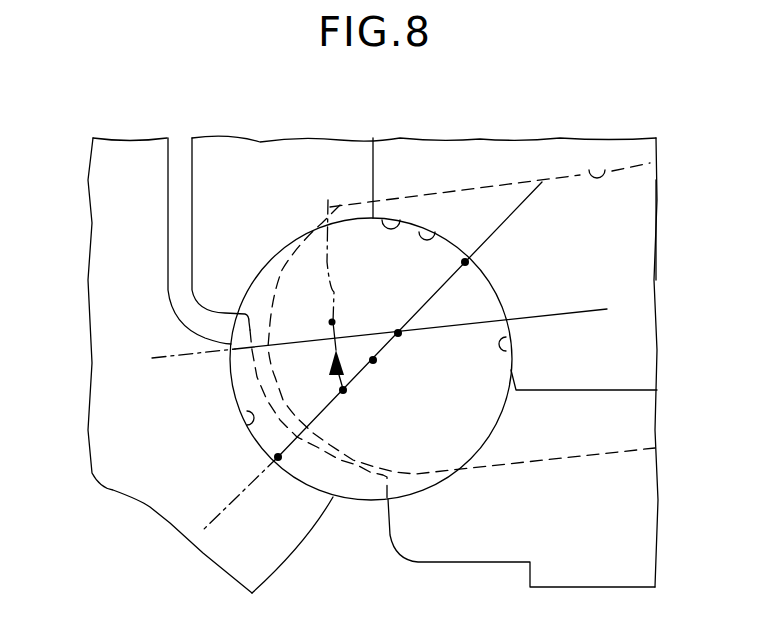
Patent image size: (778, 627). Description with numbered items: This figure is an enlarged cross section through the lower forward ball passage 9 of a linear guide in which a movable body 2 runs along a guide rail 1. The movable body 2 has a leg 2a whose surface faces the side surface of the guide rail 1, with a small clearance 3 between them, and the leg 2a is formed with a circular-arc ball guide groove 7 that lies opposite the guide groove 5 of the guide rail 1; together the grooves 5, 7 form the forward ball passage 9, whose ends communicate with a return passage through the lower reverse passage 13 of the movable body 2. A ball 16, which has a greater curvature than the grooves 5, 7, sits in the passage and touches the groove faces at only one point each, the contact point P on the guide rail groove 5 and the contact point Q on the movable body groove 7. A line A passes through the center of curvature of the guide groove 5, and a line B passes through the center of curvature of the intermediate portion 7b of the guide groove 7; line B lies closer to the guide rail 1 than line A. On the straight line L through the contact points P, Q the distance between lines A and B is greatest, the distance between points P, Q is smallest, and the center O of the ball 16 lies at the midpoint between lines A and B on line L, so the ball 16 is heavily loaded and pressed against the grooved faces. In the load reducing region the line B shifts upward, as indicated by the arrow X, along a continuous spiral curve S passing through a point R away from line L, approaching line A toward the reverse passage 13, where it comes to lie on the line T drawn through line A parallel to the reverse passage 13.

The guide rail 1 is at (84, 201).
The movable body 2 is at (668, 133).
The leg 2a is at (650, 228).
The gap 3 is at (170, 168).
The guide groove 5 is at (253, 430).
The ball guide groove 7 is at (438, 236).
The intermediate portion 7b is at (510, 350).
The forward ball passage 9 is at (400, 222).
The reverse passage 13 is at (608, 165).
The ball 16 is at (272, 272).
The straight line L is at (527, 205).
The line T is at (570, 310).
The spiral curve S is at (324, 253).
The point R is at (332, 322).
The arrow X is at (333, 380).
The line A is at (398, 333).
The center of the ball O is at (373, 360).
The line B is at (348, 393).
The contact point Q is at (465, 262).
The contact point P is at (278, 458).